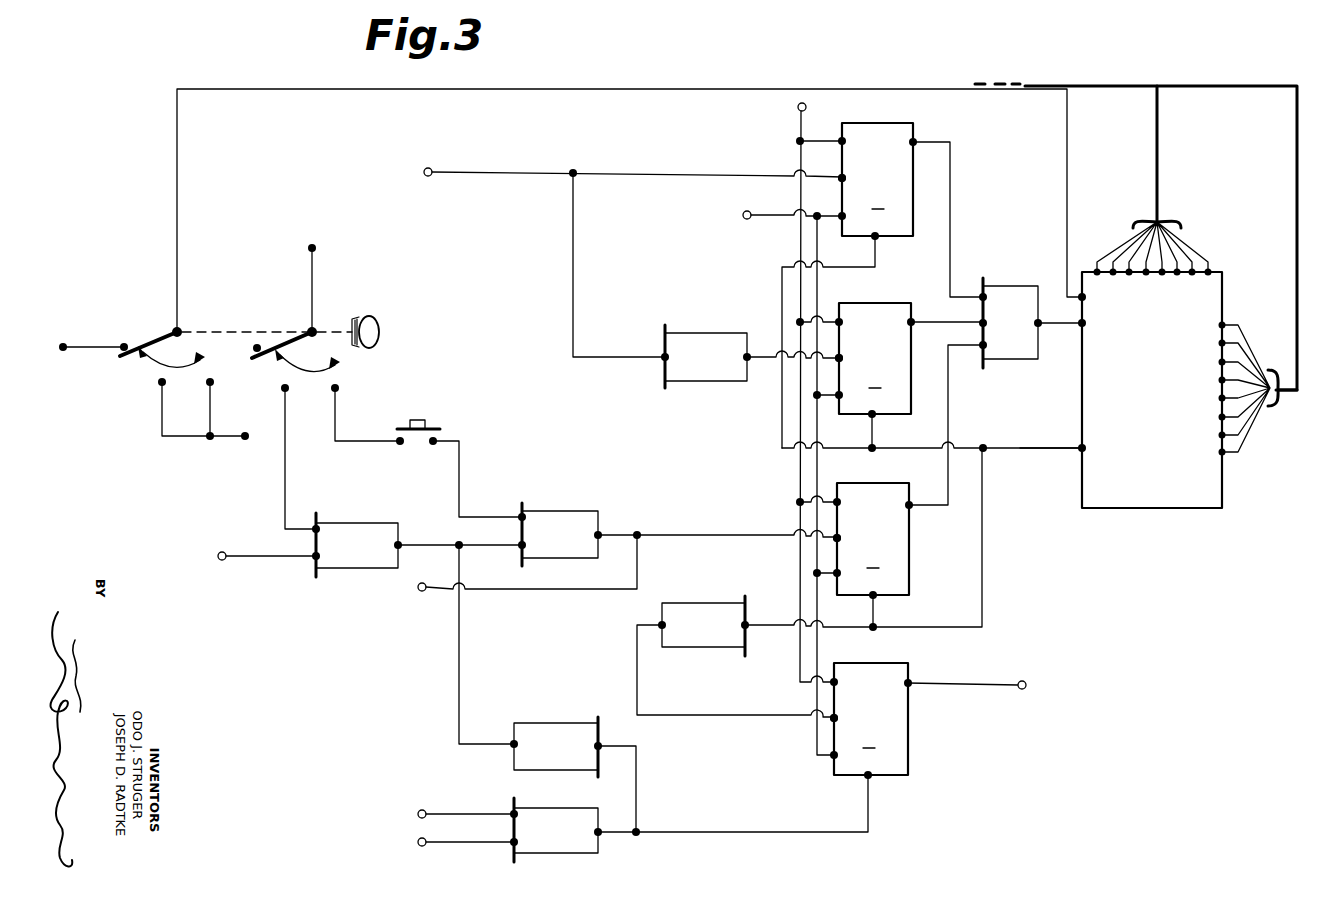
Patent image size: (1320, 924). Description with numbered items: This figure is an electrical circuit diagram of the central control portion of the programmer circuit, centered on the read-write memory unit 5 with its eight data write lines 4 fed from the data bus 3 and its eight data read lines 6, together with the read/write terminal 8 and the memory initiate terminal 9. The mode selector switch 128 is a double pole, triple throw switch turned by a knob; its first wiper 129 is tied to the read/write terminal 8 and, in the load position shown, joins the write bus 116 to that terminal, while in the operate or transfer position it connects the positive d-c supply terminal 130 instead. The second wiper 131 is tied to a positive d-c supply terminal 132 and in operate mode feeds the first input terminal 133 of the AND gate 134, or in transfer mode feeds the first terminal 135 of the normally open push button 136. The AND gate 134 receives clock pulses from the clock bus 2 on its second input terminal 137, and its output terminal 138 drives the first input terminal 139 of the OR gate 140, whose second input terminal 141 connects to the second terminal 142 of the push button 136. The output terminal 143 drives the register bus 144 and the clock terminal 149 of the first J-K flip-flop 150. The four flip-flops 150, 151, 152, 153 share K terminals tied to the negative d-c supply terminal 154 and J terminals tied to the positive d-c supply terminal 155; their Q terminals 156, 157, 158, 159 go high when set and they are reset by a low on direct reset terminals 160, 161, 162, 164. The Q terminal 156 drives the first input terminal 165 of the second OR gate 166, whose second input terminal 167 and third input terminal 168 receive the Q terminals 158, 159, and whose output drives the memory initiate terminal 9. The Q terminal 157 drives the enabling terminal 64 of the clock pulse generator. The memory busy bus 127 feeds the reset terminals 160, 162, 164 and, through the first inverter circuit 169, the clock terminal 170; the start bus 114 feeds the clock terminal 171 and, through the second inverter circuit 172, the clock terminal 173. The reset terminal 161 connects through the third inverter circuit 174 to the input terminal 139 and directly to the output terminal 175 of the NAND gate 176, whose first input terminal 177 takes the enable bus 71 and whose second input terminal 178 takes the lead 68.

The clock bus 2 is at (223, 561).
The data bus 3 is at (1297, 148).
The data write lines 4 is at (1216, 281).
The read-write memory unit 5 is at (1148, 372).
The data read lines 6 is at (1216, 318).
The read/write terminal 8 is at (1086, 300).
The memory initiate terminal 9 is at (1080, 327).
The enabling terminal 64 is at (1026, 690).
The lead 68 is at (419, 842).
The enable bus 71 is at (419, 812).
The start bus 114 is at (429, 167).
The write bus 116 is at (63, 350).
The memory busy bus 127 is at (1038, 452).
The mode selector switch 128 is at (348, 296).
The first wiper 129 is at (172, 334).
The positive d-c supply terminal 130 is at (243, 440).
The second wiper 131 is at (292, 310).
The positive d-c supply terminal 132 is at (326, 232).
The first input terminal 133 is at (316, 528).
The AND gate 134 is at (377, 522).
The first terminal 135 is at (398, 440).
The normally open push button 136 is at (420, 418).
The second input terminal 137 is at (314, 568).
The output terminal 138 is at (398, 545).
The first input terminal 139 is at (520, 548).
The OR gate 140 is at (576, 508).
The second input terminal 141 is at (518, 512).
The second terminal 142 is at (437, 440).
The output terminal 143 is at (598, 535).
The register bus 144 is at (420, 591).
The clock terminal 149 is at (835, 540).
The first J-K flip-flop 150 is at (903, 539).
The second J-K flip-flop 151 is at (897, 719).
The third J-K flip-flop 152 is at (905, 359).
The fourth J-K flip-flop 153 is at (910, 186).
The negative d-c supply terminal 154 is at (744, 219).
The positive d-c supply terminal 155 is at (797, 109).
The Q terminal 156 is at (911, 508).
The Q terminal 157 is at (910, 686).
The Q terminal 158 is at (911, 325).
The Q terminal 159 is at (915, 142).
The direct reset terminal 160 is at (876, 600).
The direct reset terminal 161 is at (871, 780).
The direct reset terminal 162 is at (876, 418).
The direct reset terminal 164 is at (878, 241).
The first input terminal 165 is at (982, 350).
The second OR gate 166 is at (1018, 282).
The second input terminal 167 is at (982, 322).
The third input terminal 168 is at (983, 294).
The first inverter circuit 169 is at (703, 602).
The clock terminal 170 is at (832, 720).
The clock terminal 171 is at (840, 178).
The second inverter circuit 172 is at (684, 384).
The clock terminal 173 is at (837, 360).
The third inverter circuit 174 is at (556, 722).
The output terminal 175 is at (600, 830).
The NAND gate 176 is at (574, 856).
The first input terminal 177 is at (512, 812).
The second input terminal 178 is at (512, 846).